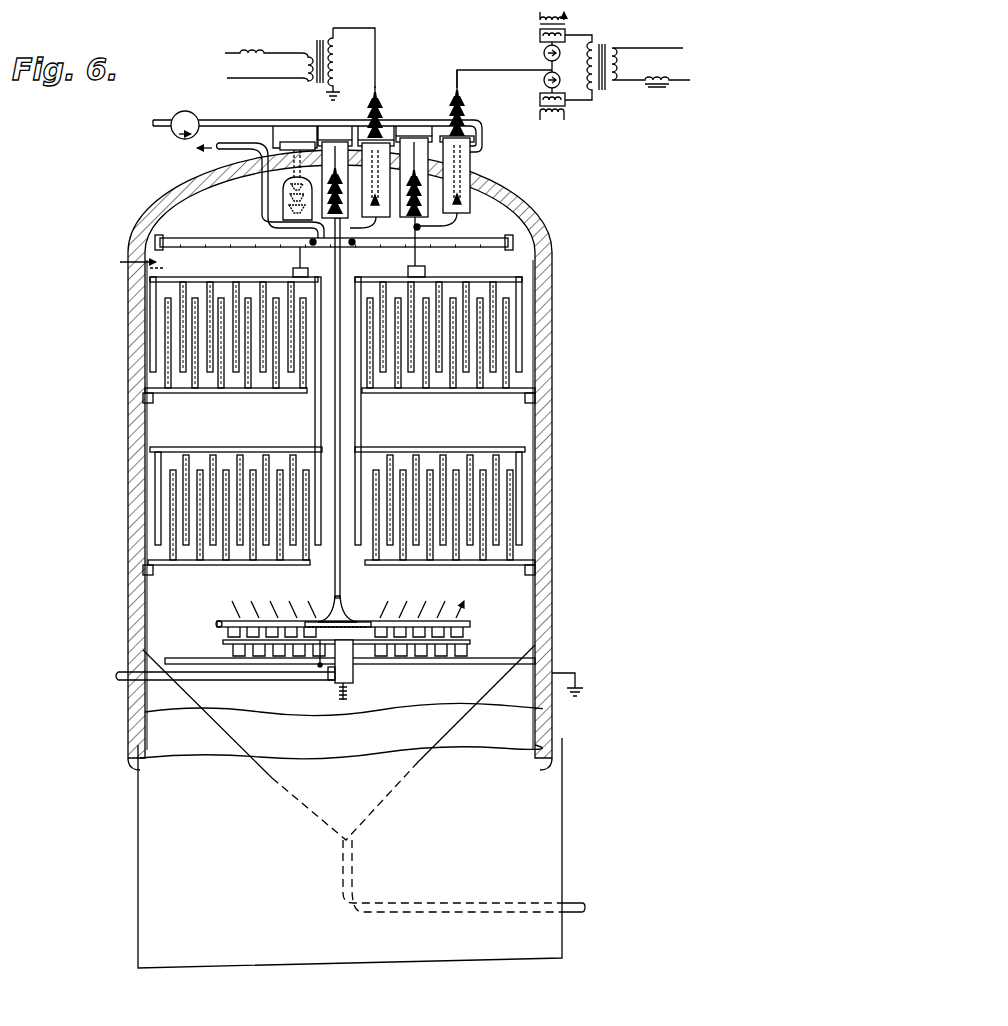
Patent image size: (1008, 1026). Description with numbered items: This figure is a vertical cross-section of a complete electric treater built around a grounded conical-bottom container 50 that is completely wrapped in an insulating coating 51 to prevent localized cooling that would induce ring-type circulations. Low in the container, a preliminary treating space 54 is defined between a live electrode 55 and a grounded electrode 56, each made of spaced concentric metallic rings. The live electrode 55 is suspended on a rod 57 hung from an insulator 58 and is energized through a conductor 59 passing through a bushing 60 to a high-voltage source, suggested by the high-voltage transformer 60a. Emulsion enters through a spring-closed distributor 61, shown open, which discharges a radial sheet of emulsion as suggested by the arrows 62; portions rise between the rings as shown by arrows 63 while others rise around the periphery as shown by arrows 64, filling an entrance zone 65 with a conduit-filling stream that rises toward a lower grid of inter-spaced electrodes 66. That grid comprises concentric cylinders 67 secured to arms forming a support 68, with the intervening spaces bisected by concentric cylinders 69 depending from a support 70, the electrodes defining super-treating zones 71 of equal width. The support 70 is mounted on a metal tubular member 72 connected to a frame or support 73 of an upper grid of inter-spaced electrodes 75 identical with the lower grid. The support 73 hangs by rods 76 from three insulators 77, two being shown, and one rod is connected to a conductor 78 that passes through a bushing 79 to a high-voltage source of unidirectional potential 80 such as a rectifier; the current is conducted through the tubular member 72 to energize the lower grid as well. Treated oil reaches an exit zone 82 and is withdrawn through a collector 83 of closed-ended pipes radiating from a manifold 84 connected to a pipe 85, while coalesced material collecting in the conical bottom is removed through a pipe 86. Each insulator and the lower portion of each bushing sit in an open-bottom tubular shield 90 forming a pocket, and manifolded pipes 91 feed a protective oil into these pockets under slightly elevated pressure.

The container 50 is at (134, 472).
The insulating coating 51 is at (127, 508).
The preliminary treating space 54 is at (222, 643).
The live electrode 55 is at (470, 620).
The grounded electrode 56 is at (455, 648).
The rod 57 is at (343, 590).
The insulator 58 is at (334, 166).
The conductor 59 is at (377, 56).
The bushing 60 is at (380, 96).
The high-voltage transformer 60a is at (314, 46).
The distributor 61 is at (355, 673).
The arrows 62 is at (320, 666).
The arrows 63 is at (254, 614).
The arrows 64 is at (203, 617).
The entrance zone 65 is at (524, 620).
The lower grid of inter-spaced electrodes 66 is at (530, 484).
The concentric cylinders 67 is at (522, 553).
The support 68 is at (474, 568).
The concentric cylinders 69 is at (526, 516).
The support 70 is at (454, 447).
The super-treating zones 71 is at (410, 470).
The metal tubular member 72 is at (313, 418).
The frame or support 73 is at (462, 280).
The upper grid of inter-spaced electrodes 75 is at (532, 326).
The rods 76 is at (294, 271).
The insulators 77 is at (414, 168).
The conductor 78 is at (457, 224).
The bushing 79 is at (462, 195).
The high-voltage source of unidirectional potential 80 is at (603, 28).
The exit zone 82 is at (122, 262).
The collector 83 is at (206, 240).
The manifold 84 is at (354, 246).
The pipe 85 is at (259, 206).
The pipe 86 is at (578, 900).
The shield 90 is at (472, 204).
The pipes 91 is at (482, 127).